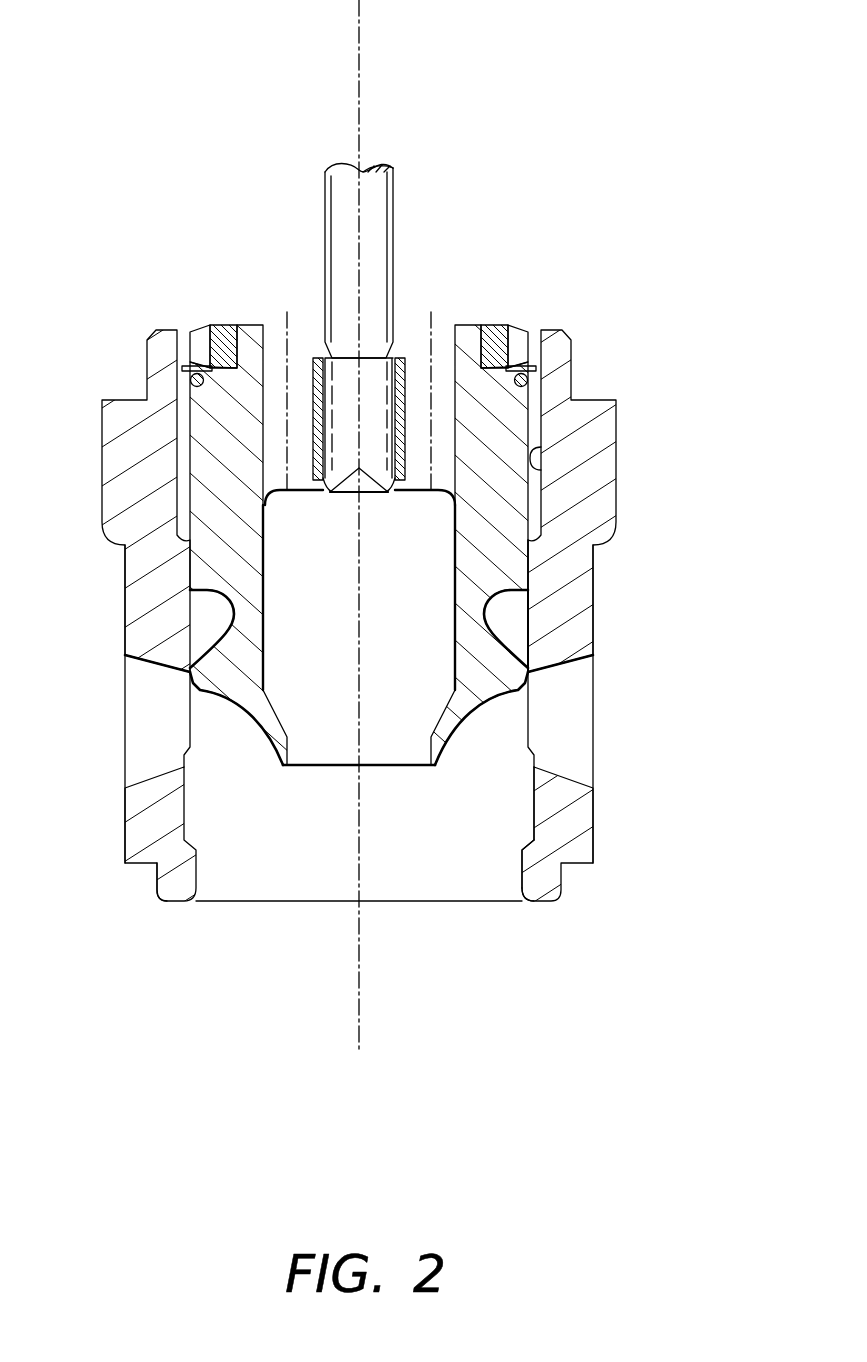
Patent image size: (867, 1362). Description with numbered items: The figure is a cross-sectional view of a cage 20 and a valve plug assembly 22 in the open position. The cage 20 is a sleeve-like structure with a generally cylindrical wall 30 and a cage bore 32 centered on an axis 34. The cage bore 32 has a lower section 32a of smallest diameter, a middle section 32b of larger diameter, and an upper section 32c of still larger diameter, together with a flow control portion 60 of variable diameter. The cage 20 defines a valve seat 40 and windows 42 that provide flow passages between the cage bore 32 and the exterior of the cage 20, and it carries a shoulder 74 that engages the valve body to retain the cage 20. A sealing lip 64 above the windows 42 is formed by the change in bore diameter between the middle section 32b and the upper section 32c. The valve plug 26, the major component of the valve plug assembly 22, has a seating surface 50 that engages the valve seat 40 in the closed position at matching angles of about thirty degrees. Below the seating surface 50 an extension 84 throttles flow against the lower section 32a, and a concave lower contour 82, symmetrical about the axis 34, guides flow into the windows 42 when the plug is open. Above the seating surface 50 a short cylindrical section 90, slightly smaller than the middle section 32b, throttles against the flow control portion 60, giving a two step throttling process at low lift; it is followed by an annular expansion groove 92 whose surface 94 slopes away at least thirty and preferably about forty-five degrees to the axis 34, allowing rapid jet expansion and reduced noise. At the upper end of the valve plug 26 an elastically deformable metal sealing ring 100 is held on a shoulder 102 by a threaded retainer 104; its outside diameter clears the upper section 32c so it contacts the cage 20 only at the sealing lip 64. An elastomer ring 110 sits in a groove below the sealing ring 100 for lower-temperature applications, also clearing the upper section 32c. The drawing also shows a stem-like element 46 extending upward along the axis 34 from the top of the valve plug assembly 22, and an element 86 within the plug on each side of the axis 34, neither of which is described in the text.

The cage 20 is at (123, 842).
The valve plug assembly 22 is at (277, 765).
The valve plug 26 is at (265, 638).
The cylindrical wall 30 is at (130, 633).
The cage bore 32 is at (400, 873).
The lower section 32a is at (525, 867).
The middle section 32b is at (503, 617).
The upper section 32c is at (540, 452).
The axis 34 is at (359, 849).
The valve seat 40 is at (530, 838).
The windows 42 is at (148, 729).
The rod 46 is at (324, 257).
The seating surface 50 is at (528, 675).
The flow control portion 60 is at (532, 793).
The sealing lip 64 is at (535, 525).
The shoulder 74 is at (133, 867).
The lower contour 82 is at (247, 718).
The extension 84 is at (527, 673).
The sleeve 86 is at (294, 487).
The cylindrical section 90 is at (190, 672).
The expansion groove 92 is at (527, 638).
The surface 94 is at (527, 638).
The sealing ring 100 is at (523, 367).
The shoulder 102 is at (500, 325).
The threaded retainer 104 is at (483, 327).
The elastomer ring 110 is at (527, 376).